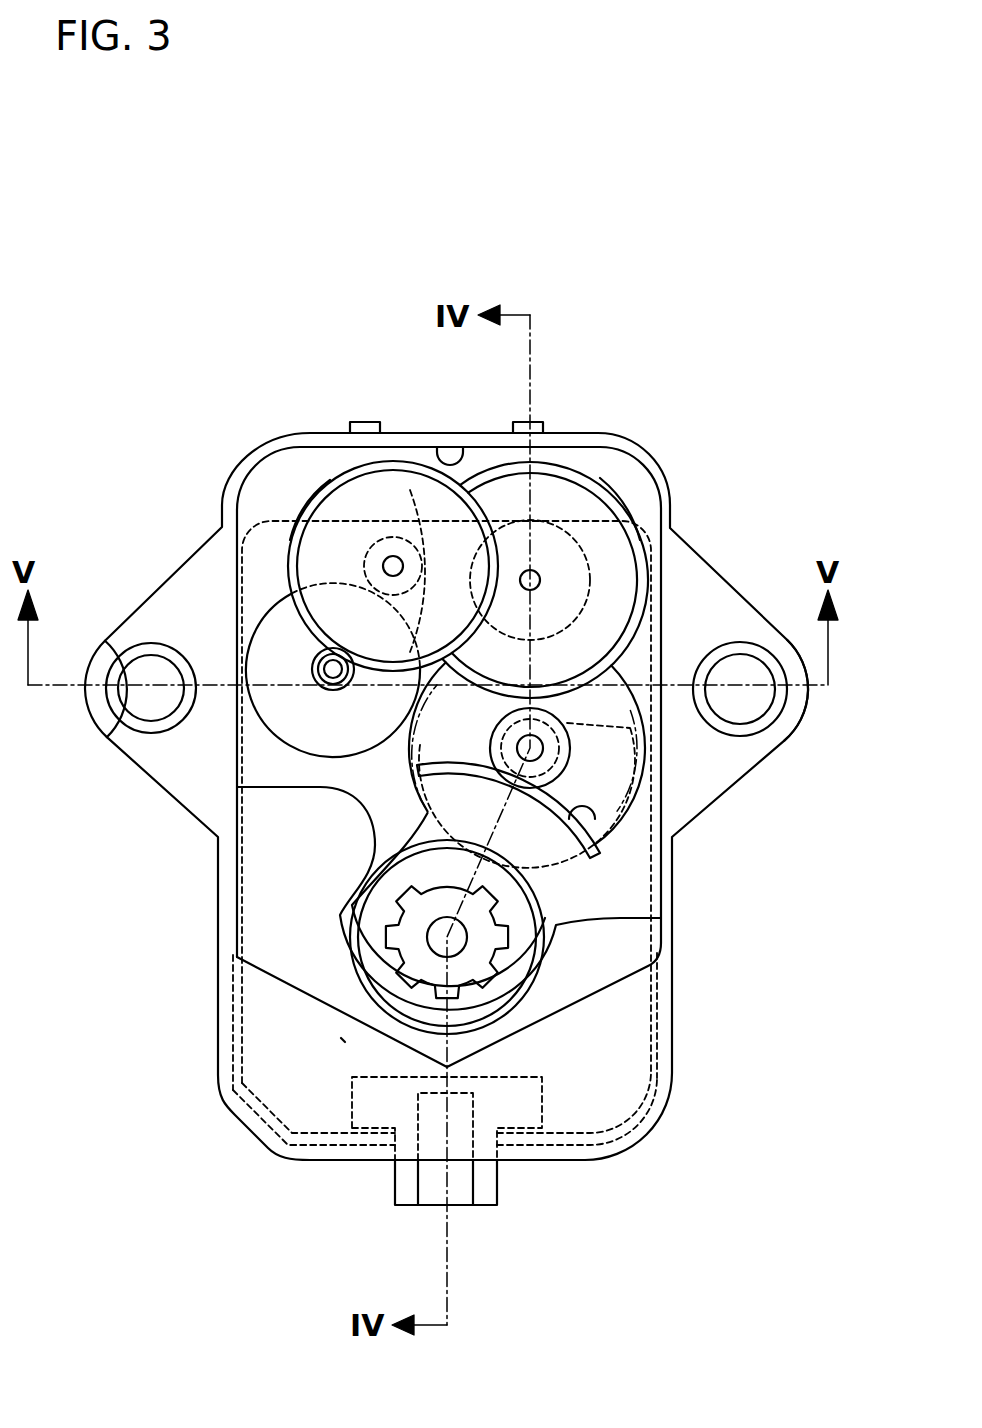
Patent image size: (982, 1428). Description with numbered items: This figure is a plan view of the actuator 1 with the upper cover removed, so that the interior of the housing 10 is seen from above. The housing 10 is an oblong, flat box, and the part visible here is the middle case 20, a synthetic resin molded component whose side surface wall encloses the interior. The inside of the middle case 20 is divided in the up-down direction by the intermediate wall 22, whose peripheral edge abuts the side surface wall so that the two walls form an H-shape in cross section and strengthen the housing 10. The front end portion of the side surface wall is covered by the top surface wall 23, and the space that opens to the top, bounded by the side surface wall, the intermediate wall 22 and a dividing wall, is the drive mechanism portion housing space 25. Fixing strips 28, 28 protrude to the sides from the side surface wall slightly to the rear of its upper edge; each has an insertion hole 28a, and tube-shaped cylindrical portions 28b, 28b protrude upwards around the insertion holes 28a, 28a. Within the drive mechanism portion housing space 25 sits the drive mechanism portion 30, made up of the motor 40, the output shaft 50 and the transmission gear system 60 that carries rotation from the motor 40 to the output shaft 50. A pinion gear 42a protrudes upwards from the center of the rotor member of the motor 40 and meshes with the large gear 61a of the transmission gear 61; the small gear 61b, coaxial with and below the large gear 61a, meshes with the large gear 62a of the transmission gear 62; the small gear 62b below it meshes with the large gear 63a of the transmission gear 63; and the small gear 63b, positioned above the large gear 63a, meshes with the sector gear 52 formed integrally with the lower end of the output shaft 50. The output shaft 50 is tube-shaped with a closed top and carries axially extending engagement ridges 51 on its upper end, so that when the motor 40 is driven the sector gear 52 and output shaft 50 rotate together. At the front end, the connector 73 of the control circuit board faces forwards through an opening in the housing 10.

The actuator 1 is at (152, 346).
The housing 10 is at (637, 462).
The middle case 20 is at (247, 467).
The intermediate wall 22 is at (637, 863).
The top surface wall 23 is at (255, 1040).
The drive mechanism portion housing space 25 is at (452, 445).
The fixing strip 28 is at (110, 735).
The insertion hole 28a is at (158, 660).
The cylindrical portion 28b is at (122, 725).
The drive mechanism portion 30 is at (278, 832).
The motor 40 is at (300, 735).
The pinion gear 42a is at (325, 660).
The output shaft 50 is at (505, 968).
The engagement ridge 51 is at (395, 905).
The sector gear 52 is at (495, 963).
The transmission gear system 60 is at (592, 474).
The transmission gear 61 is at (405, 485).
The large gear 61a is at (312, 500).
The small gear 61b is at (373, 543).
The transmission gear 62 is at (607, 513).
The large gear 62a is at (620, 508).
The small gear 62b is at (572, 520).
The transmission gear 63 is at (637, 807).
The large gear 63a is at (640, 797).
The small gear 63b is at (633, 750).
The connector 73 is at (492, 1192).